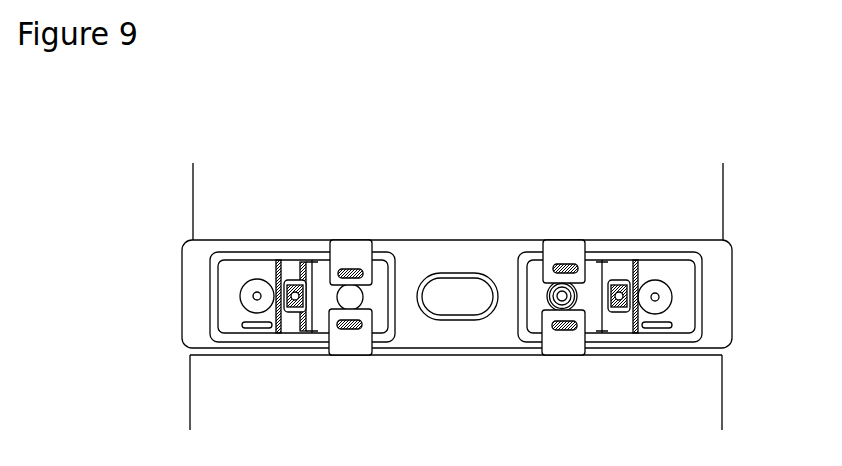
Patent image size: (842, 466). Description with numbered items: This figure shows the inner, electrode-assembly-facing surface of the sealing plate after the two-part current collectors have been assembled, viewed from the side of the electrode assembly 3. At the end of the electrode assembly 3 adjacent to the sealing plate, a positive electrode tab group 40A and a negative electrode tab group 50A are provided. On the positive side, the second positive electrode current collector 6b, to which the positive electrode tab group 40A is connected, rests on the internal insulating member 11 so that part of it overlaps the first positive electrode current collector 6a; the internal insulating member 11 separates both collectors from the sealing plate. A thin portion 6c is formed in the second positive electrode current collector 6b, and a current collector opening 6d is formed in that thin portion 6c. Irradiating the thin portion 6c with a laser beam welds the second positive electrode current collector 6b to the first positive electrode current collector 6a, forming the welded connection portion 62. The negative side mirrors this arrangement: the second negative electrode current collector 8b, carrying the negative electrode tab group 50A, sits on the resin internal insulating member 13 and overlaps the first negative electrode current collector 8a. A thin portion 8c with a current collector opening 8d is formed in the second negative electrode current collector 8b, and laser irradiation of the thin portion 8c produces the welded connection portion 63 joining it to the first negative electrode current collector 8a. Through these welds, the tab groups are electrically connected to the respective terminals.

The electrode assembly 3 is at (702, 193).
The first negative electrode current collector 8a is at (248, 272).
The second negative electrode current collector 8b is at (372, 293).
The thin portion 8c is at (292, 318).
The current collector opening 8d is at (298, 262).
The welded connection portion 63 is at (295, 313).
The negative electrode tab group 50A is at (348, 254).
The positive electrode tab group 40A is at (565, 254).
The first positive electrode current collector 6a is at (672, 277).
The second positive electrode current collector 6b is at (535, 293).
The thin portion 6c is at (617, 322).
The current collector opening 6d is at (617, 262).
The welded connection portion 62 is at (622, 312).
The internal insulating member 13 is at (212, 330).
The internal insulating member 11 is at (700, 323).